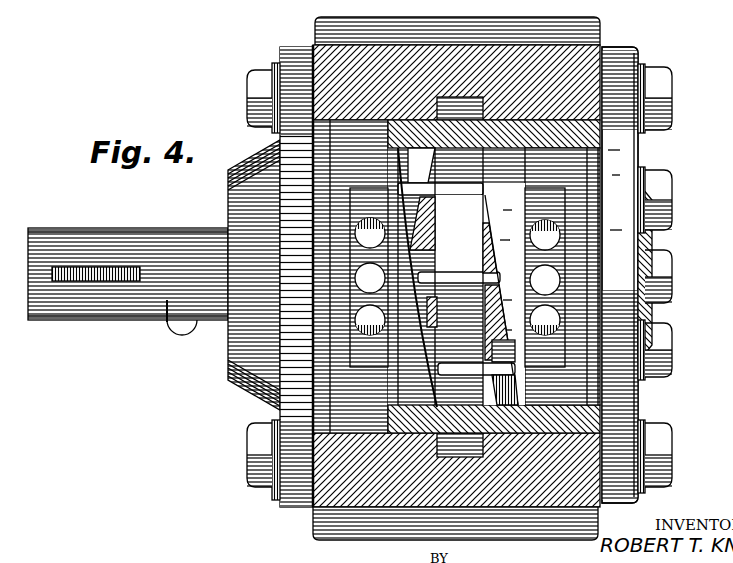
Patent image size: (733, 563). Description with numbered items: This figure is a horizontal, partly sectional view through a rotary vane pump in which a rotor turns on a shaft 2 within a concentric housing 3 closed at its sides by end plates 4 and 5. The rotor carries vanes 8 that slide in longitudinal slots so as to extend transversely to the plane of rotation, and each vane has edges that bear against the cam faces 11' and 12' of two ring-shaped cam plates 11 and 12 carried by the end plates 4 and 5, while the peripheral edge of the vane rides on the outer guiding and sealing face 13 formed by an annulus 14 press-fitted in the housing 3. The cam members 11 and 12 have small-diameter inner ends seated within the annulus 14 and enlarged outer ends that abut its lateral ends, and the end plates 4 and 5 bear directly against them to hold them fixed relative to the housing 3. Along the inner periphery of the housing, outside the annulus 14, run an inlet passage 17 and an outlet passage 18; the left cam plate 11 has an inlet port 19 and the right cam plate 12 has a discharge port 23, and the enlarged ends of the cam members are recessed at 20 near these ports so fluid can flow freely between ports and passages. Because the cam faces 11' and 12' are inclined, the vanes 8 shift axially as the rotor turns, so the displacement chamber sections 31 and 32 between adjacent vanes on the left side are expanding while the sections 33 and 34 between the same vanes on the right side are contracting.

The shaft 2 is at (176, 255).
The housing 3 is at (333, 68).
The end plate 4 is at (293, 140).
The end plate 5 is at (618, 153).
The vane 8 is at (466, 280).
The cam plate 11 is at (350, 216).
The cam face 11' is at (421, 203).
The cam plate 12 is at (475, 79).
The cam face 12' is at (455, 480).
The outer guiding and sealing face 13 is at (510, 143).
The annulus 14 is at (553, 148).
The inlet passage 17 is at (448, 457).
The outlet passage 18 is at (460, 97).
The inlet port 19 is at (383, 305).
The recess 20 is at (350, 248).
The discharge port 23 is at (535, 310).
The displacement chamber section 31 is at (428, 296).
The displacement chamber section 32 is at (425, 227).
The displacement chamber section 33 is at (505, 372).
The displacement chamber section 34 is at (486, 258).